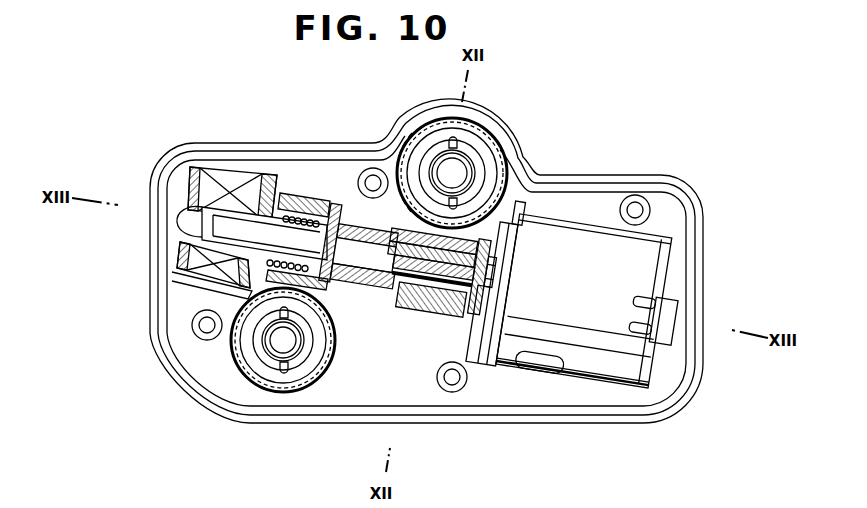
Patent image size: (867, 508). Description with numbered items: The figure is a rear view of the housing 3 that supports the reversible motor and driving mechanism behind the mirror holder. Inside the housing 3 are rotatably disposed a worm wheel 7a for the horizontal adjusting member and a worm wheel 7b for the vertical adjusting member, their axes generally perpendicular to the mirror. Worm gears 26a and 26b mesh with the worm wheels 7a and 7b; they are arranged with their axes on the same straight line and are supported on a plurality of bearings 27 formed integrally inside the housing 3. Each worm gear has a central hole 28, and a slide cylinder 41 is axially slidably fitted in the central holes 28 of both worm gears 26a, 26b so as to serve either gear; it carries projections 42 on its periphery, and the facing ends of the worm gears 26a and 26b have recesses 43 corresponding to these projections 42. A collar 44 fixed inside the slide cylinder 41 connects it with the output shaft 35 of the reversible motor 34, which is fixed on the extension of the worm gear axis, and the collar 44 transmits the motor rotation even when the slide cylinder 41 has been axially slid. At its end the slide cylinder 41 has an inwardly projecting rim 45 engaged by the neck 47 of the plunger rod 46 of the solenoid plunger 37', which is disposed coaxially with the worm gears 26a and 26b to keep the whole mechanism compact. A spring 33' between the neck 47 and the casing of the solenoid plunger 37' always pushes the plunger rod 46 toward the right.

The housing 3 is at (628, 176).
The worm wheel 7a is at (247, 372).
The worm wheel 7b is at (480, 126).
The worm gear 26a is at (307, 197).
The worm gear 26b is at (430, 322).
The bearings 27 is at (361, 194).
The spring 28 is at (322, 197).
The spring 33' is at (261, 193).
The reversible motor 34 is at (583, 303).
The output shaft 35 is at (474, 279).
The solenoid plunger 37' is at (224, 200).
The slide cylinder 41 is at (465, 305).
The projections 42 is at (390, 140).
The recesses 43 is at (428, 108).
The collar 44 is at (478, 255).
The rim 45 is at (331, 204).
The plunger rod 46 is at (180, 230).
The neck 47 is at (406, 253).